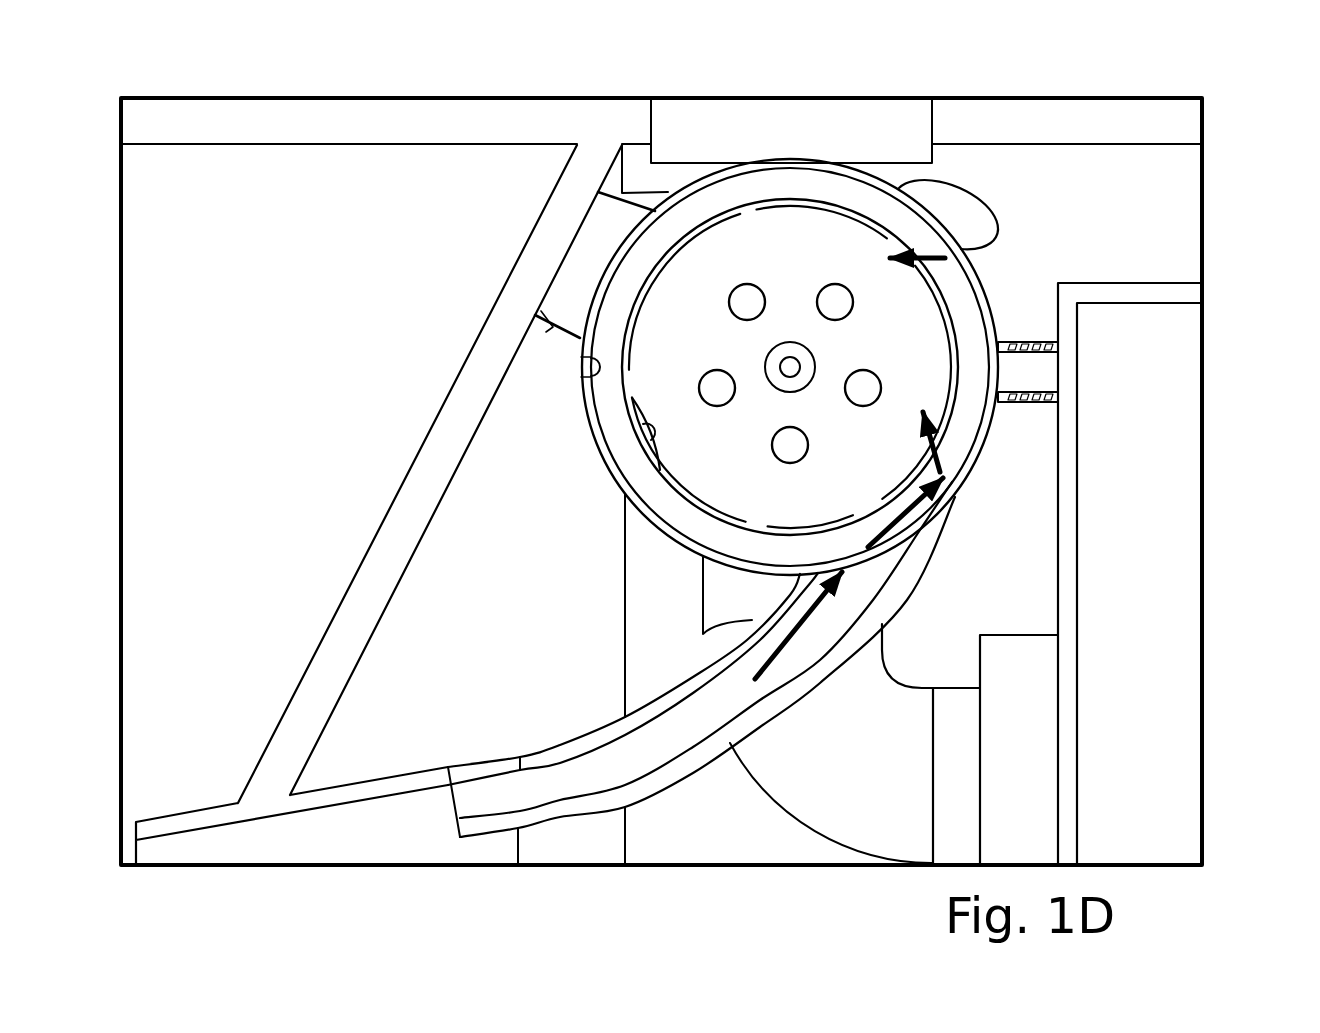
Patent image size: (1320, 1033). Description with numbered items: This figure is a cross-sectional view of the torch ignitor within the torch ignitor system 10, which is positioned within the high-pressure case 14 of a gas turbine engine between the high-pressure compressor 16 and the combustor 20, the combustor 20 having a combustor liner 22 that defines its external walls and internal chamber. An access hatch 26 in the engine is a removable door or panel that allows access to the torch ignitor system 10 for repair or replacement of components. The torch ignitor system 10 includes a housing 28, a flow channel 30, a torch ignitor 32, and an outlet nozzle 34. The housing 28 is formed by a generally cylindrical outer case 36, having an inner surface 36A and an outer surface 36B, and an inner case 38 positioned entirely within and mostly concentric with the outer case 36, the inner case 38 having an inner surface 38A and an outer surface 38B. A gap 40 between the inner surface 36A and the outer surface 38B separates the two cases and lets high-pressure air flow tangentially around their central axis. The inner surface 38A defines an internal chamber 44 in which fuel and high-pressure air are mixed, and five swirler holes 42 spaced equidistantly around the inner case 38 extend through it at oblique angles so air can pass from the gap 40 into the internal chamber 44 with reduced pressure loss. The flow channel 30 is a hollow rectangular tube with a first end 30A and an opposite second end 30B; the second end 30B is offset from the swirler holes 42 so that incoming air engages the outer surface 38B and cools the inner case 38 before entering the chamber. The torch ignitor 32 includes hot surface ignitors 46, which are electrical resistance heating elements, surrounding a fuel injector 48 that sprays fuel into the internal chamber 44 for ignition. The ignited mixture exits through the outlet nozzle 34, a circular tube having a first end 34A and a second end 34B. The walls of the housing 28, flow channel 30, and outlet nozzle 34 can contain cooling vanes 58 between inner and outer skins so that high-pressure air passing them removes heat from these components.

The torch ignitor system 10 is at (845, 93).
The high-pressure case 14 is at (1018, 125).
The high-pressure compressor 16 is at (337, 840).
The combustor 20 is at (1150, 660).
The combustor liner 22 is at (1158, 298).
The access hatch 26 is at (886, 137).
The housing 28 is at (1003, 257).
The flow channel 30 is at (713, 712).
The first end 30A is at (483, 842).
The second end 30B is at (928, 563).
The torch ignitor 32 is at (773, 399).
The outlet nozzle 34 is at (1135, 416).
The first end 34A is at (1007, 333).
The second end 34B is at (1046, 405).
The outer case 36 is at (661, 303).
The inner surface 36A is at (580, 377).
The outer surface 36B is at (580, 357).
The inner case 38 is at (621, 290).
The inner surface 38A is at (653, 443).
The outer surface 38B is at (657, 473).
The gap 40 is at (664, 243).
The swirler holes 42 is at (905, 250).
The internal chamber 44 is at (834, 251).
The hot surface ignitors 46 is at (833, 302).
The fuel injector 48 is at (792, 372).
The cooling vanes 58 is at (1057, 345).